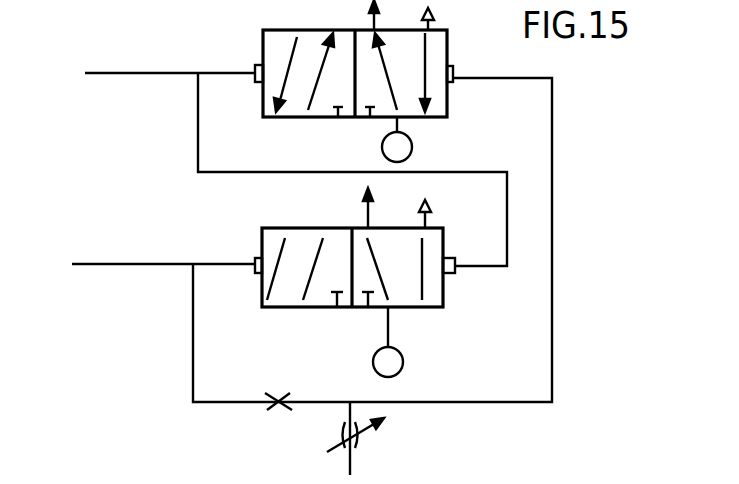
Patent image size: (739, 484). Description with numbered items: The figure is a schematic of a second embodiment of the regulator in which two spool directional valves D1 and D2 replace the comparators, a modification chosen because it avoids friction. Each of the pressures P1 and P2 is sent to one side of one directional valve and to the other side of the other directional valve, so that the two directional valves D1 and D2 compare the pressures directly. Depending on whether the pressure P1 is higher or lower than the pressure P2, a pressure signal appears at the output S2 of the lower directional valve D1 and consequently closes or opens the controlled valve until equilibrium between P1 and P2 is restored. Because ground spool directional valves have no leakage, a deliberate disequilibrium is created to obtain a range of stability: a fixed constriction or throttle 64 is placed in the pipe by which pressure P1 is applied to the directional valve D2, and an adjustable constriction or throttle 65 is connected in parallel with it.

The directional valve D2 is at (290, 118).
The directional valve D1 is at (262, 248).
The pressure signal output S2 is at (351, 203).
The pressure P2 is at (270, 162).
The pressure P1 is at (293, 240).
The fixed constriction or throttle 64 is at (277, 396).
The adjustable constriction or throttle 65 is at (357, 443).